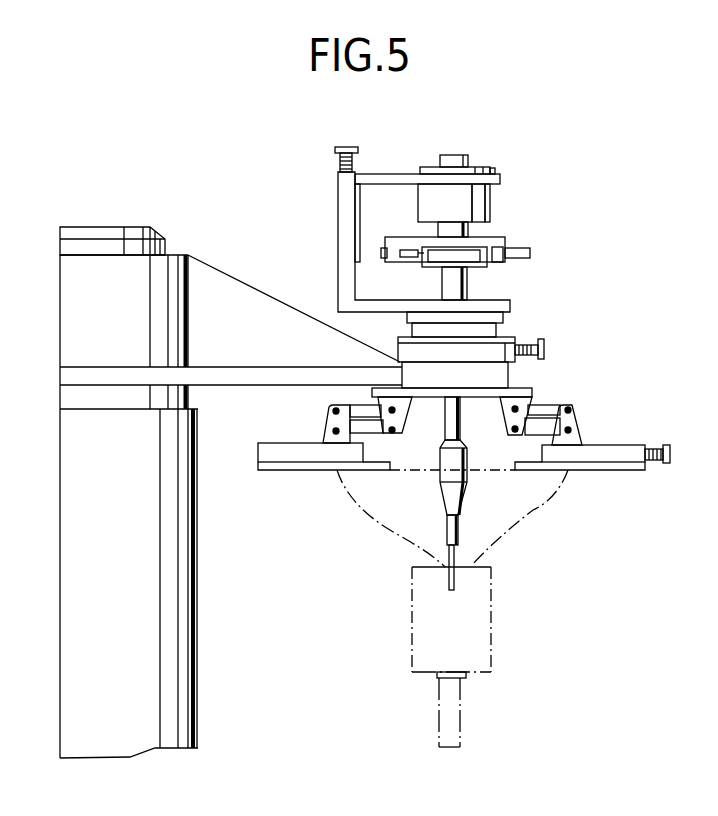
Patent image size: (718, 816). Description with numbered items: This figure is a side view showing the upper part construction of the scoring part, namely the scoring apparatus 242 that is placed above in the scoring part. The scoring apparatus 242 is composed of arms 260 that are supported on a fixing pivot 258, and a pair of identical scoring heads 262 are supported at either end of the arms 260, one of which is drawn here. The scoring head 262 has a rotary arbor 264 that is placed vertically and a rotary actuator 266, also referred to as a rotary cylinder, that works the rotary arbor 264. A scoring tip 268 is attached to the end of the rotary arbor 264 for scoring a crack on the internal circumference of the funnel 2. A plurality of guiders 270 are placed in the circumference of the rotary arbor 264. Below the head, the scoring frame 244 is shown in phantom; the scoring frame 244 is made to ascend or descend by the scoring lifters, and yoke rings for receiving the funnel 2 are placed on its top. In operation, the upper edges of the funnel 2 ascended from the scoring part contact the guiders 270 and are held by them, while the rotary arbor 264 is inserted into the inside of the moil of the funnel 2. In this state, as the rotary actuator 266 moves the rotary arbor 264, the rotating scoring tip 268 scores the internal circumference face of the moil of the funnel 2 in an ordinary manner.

The funnel 2 is at (543, 508).
The scoring apparatus 242 is at (515, 296).
The scoring frame 244 is at (483, 618).
The fixing pivot 258 is at (97, 232).
The arm 260 is at (268, 312).
The scoring head 262 is at (500, 345).
The rotary arbor 264 is at (465, 500).
The rotary actuator 266 is at (490, 205).
The scoring tip 268 is at (450, 588).
The guider 270 is at (290, 470).